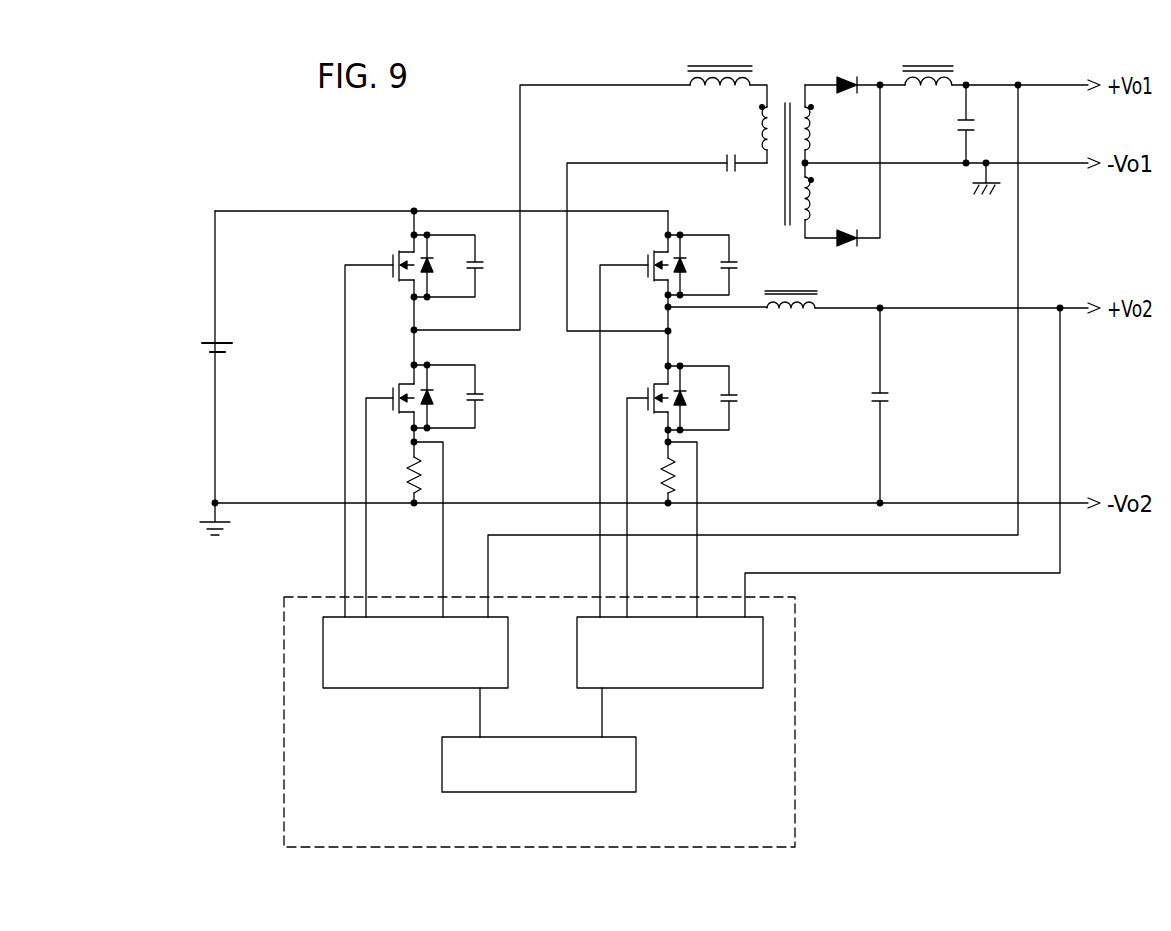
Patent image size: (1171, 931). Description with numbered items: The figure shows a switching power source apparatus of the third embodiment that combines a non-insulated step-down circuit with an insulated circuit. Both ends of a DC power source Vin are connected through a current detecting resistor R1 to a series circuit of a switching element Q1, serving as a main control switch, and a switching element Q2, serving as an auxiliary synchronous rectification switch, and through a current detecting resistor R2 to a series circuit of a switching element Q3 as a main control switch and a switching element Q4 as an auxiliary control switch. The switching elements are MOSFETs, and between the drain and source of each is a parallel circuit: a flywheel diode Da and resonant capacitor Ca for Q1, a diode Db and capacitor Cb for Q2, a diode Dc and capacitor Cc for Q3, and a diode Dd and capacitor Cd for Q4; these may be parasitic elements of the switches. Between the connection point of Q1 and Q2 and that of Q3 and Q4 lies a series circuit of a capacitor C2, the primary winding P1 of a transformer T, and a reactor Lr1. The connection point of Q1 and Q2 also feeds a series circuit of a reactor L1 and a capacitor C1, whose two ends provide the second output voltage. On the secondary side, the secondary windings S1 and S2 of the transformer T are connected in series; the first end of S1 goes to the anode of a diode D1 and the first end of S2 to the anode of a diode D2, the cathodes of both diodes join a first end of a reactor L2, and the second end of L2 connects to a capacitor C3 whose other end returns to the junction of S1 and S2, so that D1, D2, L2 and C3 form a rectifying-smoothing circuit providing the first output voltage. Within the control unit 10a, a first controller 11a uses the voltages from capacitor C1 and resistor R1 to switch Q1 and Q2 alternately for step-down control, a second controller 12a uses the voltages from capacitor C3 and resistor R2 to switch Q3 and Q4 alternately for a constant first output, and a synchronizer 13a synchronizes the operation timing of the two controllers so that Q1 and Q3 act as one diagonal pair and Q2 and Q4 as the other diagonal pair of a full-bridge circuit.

The control unit 10a is at (577, 722).
The first controller 11a is at (721, 690).
The second controller 12a is at (372, 690).
The synchronizer 13a is at (636, 778).
The switching element Q1 is at (634, 420).
The switching element Q2 is at (647, 486).
The switching element Q3 is at (390, 487).
The switching element Q4 is at (379, 423).
The diode Da is at (694, 265).
The diode Db is at (694, 398).
The diode Dc is at (438, 396).
The diode Dd is at (438, 266).
The capacitor Ca is at (724, 265).
The capacitor Cb is at (724, 398).
The capacitor Cc is at (469, 396).
The capacitor Cd is at (469, 266).
The capacitor C1 is at (898, 405).
The capacitor C2 is at (742, 176).
The capacitor C3 is at (982, 124).
The current detecting resistor R1 is at (665, 529).
The current detecting resistor R2 is at (409, 529).
The reactor L1 is at (791, 284).
The reactor L2 is at (928, 60).
The reactor Lr1 is at (720, 60).
The transformer T is at (790, 140).
The primary winding P1 is at (750, 134).
The secondary winding S1 is at (825, 124).
The secondary winding S2 is at (825, 200).
The diode D1 is at (847, 69).
The diode D2 is at (847, 253).
The DC power source Vin is at (199, 344).